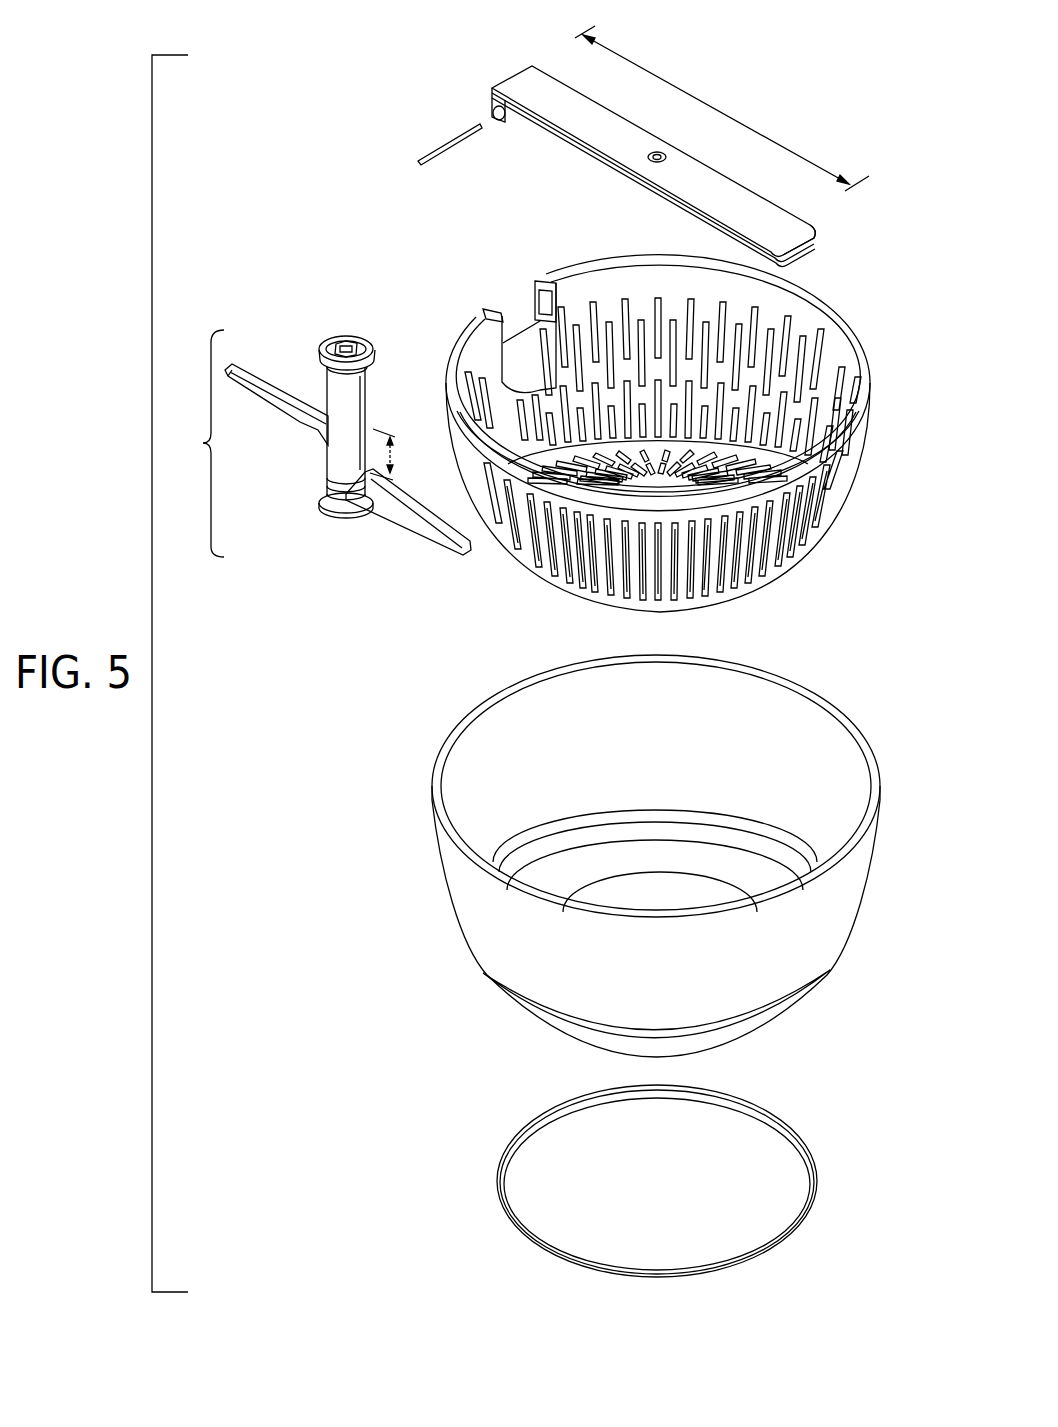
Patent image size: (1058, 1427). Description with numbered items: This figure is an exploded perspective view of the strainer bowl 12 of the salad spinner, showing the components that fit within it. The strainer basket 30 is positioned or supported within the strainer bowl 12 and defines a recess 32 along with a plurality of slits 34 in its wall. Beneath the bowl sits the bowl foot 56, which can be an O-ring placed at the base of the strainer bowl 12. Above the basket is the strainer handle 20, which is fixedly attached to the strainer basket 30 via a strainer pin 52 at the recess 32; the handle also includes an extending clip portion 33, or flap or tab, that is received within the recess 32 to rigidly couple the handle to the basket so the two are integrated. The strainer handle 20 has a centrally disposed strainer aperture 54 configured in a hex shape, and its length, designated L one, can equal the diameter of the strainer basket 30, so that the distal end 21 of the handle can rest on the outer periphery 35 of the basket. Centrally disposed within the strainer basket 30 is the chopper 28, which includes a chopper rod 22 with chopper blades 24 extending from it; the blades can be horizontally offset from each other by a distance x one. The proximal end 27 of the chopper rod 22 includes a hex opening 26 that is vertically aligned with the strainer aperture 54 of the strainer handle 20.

The strainer bowl 12 is at (863, 873).
The strainer handle 20 is at (520, 74).
The distal end 21 is at (817, 240).
The chopper rod 22 is at (333, 467).
The chopper blades 24 is at (260, 388).
The hex opening 26 is at (355, 350).
The proximal end 27 is at (340, 337).
The chopper 28 is at (198, 443).
The strainer basket 30 is at (817, 340).
The recess 32 is at (507, 325).
The extending clip portion 33 is at (510, 120).
The plurality of slits 34 is at (720, 317).
The outer periphery 35 is at (868, 388).
The strainer pin 52 is at (443, 143).
The strainer aperture 54 is at (657, 155).
The bowl foot 56 is at (805, 1140).